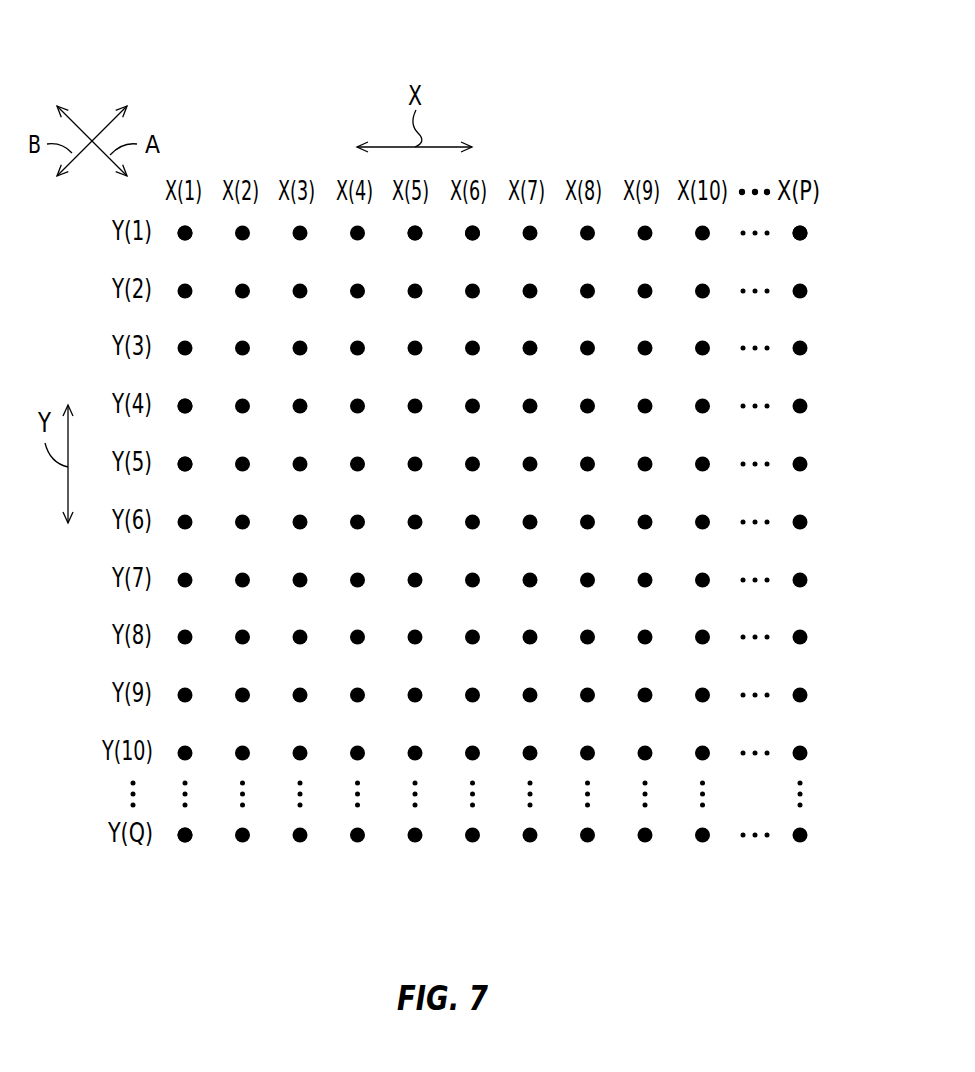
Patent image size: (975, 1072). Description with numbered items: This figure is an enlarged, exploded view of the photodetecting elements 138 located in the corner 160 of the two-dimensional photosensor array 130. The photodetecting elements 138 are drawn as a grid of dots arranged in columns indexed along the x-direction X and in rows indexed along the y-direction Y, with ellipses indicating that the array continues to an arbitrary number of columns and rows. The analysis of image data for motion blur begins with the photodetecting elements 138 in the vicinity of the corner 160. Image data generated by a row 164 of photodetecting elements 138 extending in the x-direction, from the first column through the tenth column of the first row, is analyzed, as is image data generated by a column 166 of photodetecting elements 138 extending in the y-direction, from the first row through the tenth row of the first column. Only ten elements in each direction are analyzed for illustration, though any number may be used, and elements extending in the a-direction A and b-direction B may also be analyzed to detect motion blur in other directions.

The two-dimensional photosensor array 130 is at (746, 75).
The photodetecting elements 138 is at (415, 240).
The corner 160 is at (172, 222).
The row 164 is at (830, 232).
The column 166 is at (187, 862).